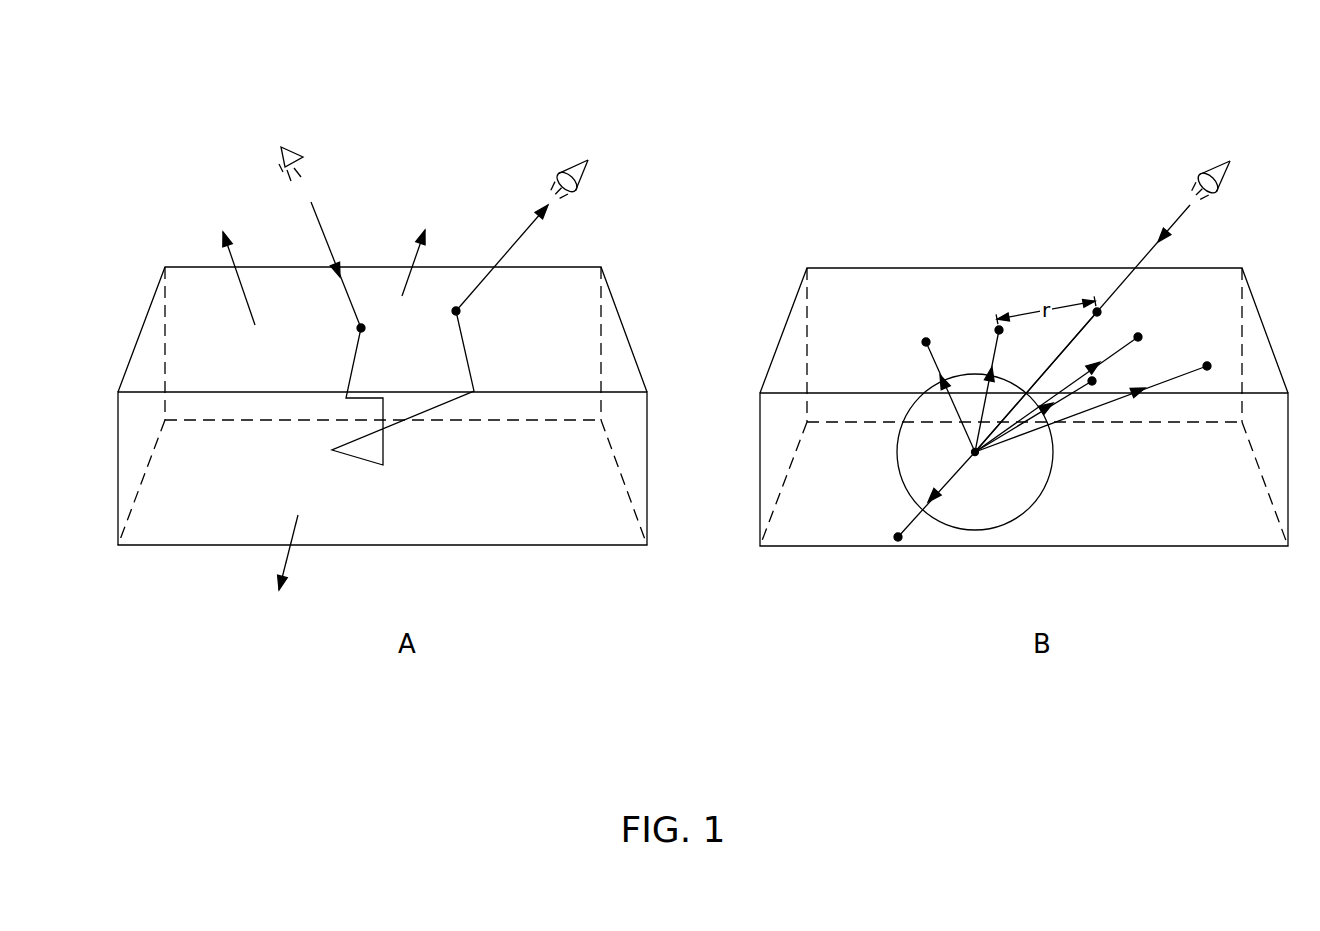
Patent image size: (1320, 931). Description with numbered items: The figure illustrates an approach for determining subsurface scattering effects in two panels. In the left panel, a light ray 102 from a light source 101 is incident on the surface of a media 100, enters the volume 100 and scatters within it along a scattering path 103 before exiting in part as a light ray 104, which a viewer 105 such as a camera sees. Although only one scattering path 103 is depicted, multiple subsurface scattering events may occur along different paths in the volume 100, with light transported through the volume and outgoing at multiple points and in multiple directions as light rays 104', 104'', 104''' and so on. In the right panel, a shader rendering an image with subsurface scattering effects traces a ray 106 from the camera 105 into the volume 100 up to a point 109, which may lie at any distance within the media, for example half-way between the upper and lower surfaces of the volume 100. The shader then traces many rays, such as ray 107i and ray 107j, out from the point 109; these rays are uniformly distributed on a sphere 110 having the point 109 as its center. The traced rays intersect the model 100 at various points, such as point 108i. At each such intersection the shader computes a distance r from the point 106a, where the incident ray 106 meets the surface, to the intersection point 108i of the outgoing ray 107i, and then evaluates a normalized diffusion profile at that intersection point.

The media 100 is at (565, 282).
The light source 101 is at (287, 145).
The light ray 102 is at (327, 238).
The scattering path 103 is at (410, 422).
The light ray 104 is at (500, 253).
The light ray 104' is at (227, 266).
The light ray 104'' is at (429, 250).
The light ray 104''' is at (284, 570).
The viewer 105 is at (573, 165).
The ray 106 is at (1177, 223).
The point 106a is at (1104, 316).
The ray 107i is at (988, 378).
The ray 107j is at (912, 518).
The point 108i is at (996, 326).
The point 109 is at (978, 456).
The sphere 110 is at (1053, 475).